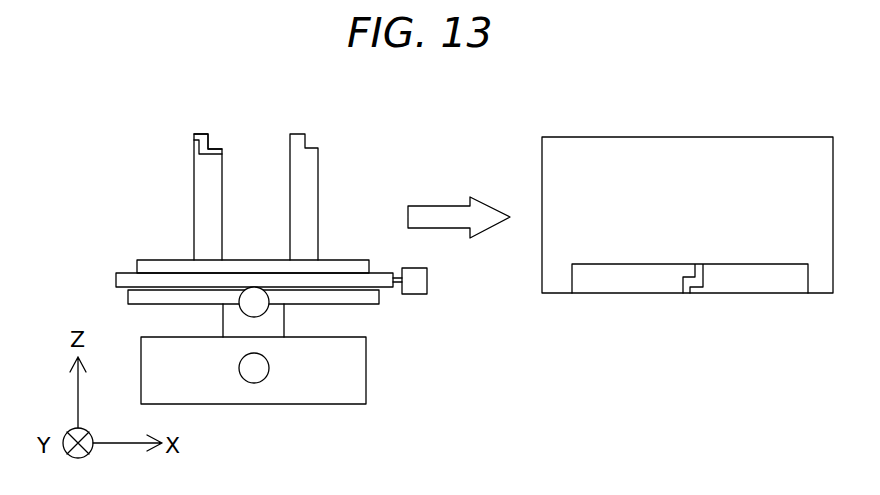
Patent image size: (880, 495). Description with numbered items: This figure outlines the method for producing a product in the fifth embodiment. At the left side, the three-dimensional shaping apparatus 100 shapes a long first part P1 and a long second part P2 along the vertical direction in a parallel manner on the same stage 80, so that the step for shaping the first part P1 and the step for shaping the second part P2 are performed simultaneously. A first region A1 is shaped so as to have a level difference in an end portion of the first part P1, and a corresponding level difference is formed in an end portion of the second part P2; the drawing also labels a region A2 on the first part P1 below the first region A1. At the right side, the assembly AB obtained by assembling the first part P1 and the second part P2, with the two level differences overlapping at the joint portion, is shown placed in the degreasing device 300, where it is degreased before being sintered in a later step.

The three-dimensional shaping apparatus 100 is at (114, 121).
The stage 80 is at (170, 260).
The first region A1 is at (204, 133).
The second region of workpiece A2 is at (202, 210).
The first part P1 is at (223, 197).
The second part P2 is at (318, 197).
The degreasing device 300 is at (524, 121).
The assembly AB is at (639, 233).